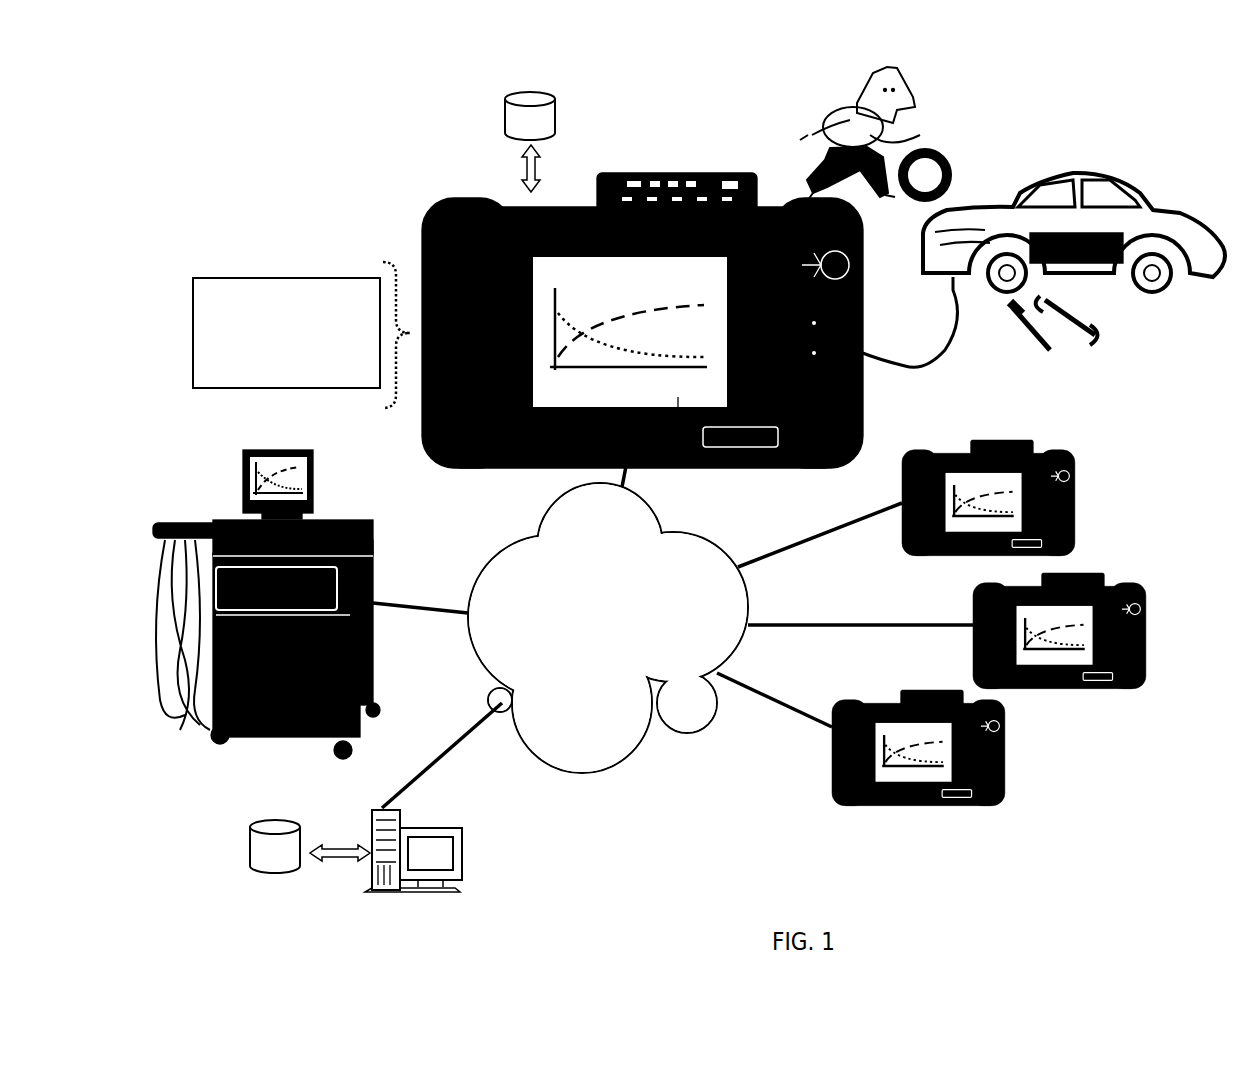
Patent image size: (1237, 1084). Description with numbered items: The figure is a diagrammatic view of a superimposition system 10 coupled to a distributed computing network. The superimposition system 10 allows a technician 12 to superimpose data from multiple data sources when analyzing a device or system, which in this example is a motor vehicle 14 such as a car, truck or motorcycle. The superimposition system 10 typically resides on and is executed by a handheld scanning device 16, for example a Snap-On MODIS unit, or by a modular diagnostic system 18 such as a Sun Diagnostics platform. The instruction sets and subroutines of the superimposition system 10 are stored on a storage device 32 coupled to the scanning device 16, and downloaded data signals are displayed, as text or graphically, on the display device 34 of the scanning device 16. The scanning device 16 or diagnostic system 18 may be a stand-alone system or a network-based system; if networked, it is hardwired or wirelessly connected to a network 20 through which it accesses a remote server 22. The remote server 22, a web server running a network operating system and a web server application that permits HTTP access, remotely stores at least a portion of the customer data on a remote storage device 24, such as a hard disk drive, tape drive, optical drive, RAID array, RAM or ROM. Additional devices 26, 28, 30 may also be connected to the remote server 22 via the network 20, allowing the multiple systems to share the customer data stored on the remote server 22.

The superimposition system 10 is at (193, 317).
The technician 12 is at (808, 135).
The motor vehicle 14 is at (1030, 178).
The handheld scanning device 16 is at (435, 452).
The modular diagnostic system 18 is at (372, 697).
The network 20 is at (450, 645).
The remote server 22 is at (370, 833).
The remote storage device 24 is at (250, 843).
The additional device 26 is at (1075, 478).
The additional device 28 is at (1147, 620).
The additional device 30 is at (1005, 747).
The storage device 32 is at (503, 110).
The display device 34 is at (690, 453).